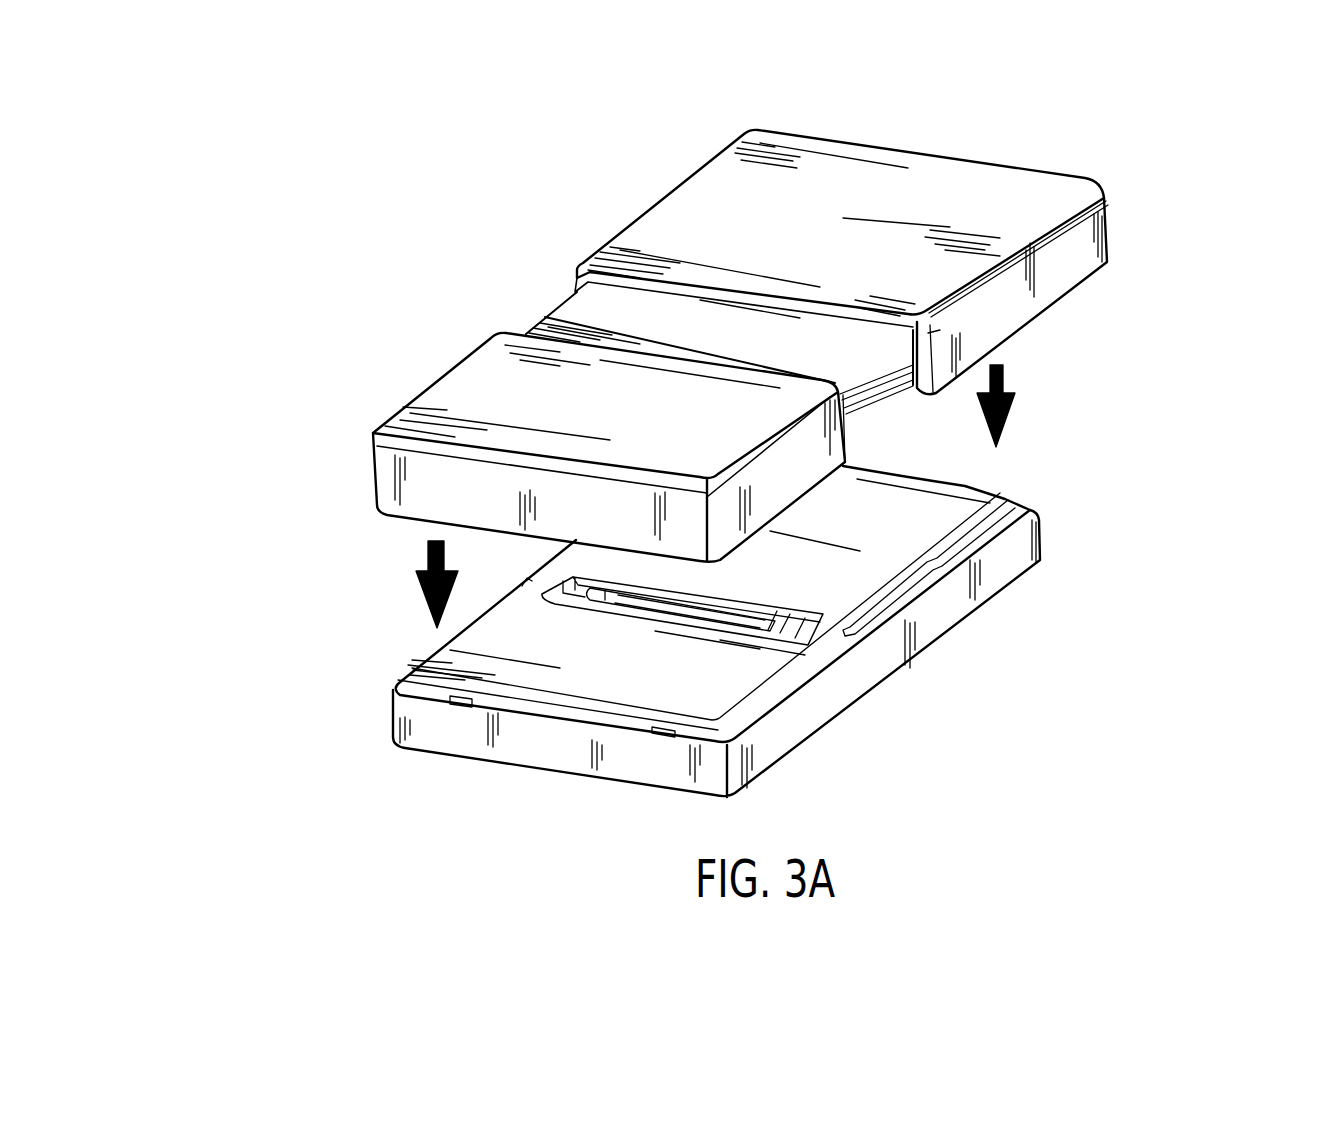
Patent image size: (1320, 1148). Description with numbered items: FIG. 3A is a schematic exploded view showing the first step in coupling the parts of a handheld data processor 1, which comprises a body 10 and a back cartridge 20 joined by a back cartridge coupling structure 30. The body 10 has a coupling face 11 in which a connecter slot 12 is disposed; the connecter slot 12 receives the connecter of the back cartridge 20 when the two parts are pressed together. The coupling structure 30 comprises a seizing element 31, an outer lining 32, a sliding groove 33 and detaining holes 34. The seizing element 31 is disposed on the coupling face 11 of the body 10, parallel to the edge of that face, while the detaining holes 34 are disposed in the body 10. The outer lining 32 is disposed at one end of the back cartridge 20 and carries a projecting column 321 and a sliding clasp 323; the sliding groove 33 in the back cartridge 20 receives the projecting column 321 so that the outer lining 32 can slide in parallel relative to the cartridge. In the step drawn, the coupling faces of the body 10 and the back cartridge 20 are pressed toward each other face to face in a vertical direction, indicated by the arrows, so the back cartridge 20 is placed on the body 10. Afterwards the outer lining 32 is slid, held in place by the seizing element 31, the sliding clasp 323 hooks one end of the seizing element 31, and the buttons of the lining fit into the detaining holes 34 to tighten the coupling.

The handheld data processor 1 is at (342, 453).
The body 10 is at (967, 625).
The coupling face 11 is at (473, 648).
The connecter slot 12 is at (792, 630).
The back cartridge 20 is at (426, 360).
The back cartridge coupling structure 30 is at (1073, 297).
The seizing element 31 is at (887, 603).
The outer lining 32 is at (1107, 228).
The projecting column 321 is at (940, 330).
The sliding clasp 323 is at (916, 392).
The sliding groove 33 is at (867, 388).
The detaining holes 34 is at (460, 705).